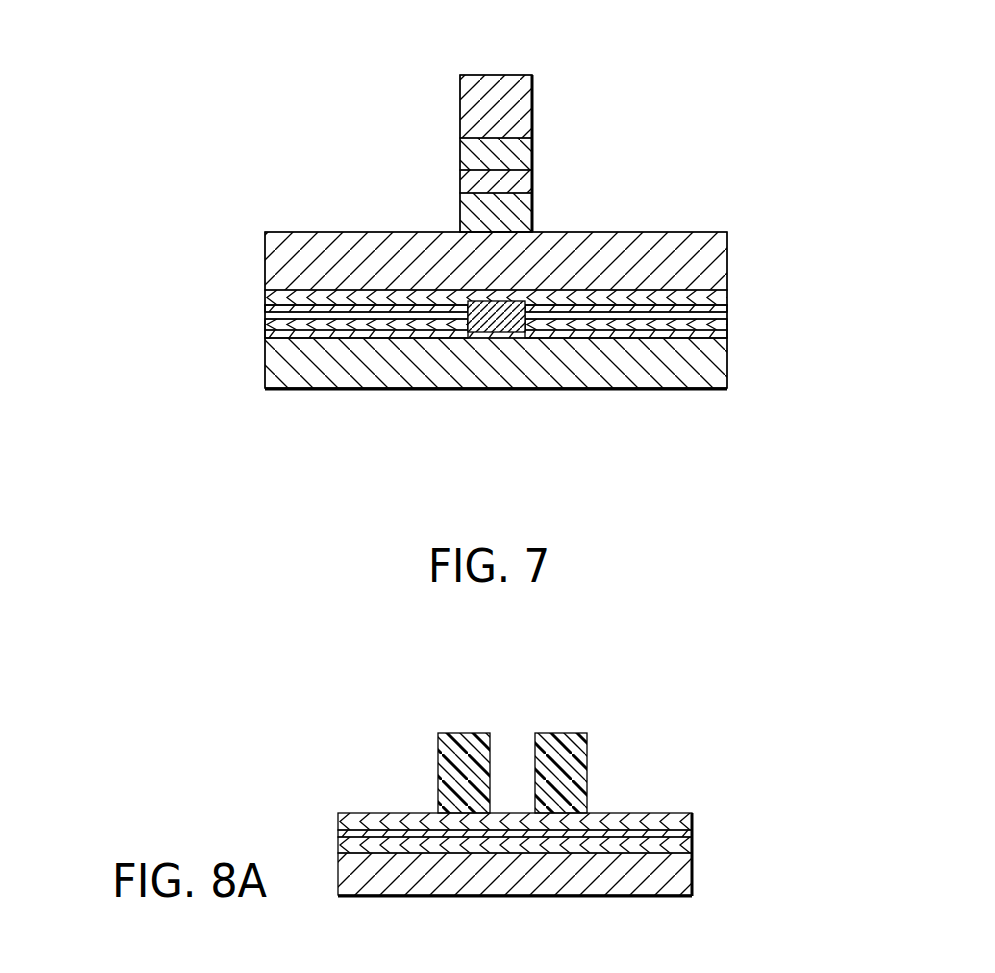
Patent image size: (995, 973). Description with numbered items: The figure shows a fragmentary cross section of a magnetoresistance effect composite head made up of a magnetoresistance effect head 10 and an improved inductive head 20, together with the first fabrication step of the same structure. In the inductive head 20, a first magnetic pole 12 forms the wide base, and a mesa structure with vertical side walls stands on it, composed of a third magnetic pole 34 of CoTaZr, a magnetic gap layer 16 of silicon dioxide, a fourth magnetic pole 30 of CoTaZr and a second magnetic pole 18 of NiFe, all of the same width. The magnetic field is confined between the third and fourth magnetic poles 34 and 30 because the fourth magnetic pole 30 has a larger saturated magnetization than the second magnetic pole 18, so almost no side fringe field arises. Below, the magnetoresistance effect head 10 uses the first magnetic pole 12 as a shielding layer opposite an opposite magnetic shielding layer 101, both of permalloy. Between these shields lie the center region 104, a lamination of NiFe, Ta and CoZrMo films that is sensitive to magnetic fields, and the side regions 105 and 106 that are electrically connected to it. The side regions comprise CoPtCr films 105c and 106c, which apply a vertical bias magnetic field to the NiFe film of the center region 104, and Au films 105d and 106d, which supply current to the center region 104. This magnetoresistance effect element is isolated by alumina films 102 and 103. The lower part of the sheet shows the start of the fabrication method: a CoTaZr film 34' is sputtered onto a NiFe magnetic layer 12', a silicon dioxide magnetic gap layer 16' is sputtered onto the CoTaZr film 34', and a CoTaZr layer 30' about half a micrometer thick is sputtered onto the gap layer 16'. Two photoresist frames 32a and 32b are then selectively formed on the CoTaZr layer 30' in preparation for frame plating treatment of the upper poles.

In FIG. 7, the magnetoresistance effect head 10 is at (95, 230).
In FIG. 7, the first magnetic pole 12 is at (496, 236).
In FIG. 7, the magnetic gap layer 16 is at (551, 156).
In FIG. 7, the second magnetic pole 18 is at (502, 75).
In FIG. 7, the inductive head 20 is at (771, 22).
In FIG. 7, the fourth magnetic pole 30 is at (547, 128).
In FIG. 7, the third magnetic pole 34 is at (552, 194).
In FIG. 7, the opposite magnetic shielding layer 101 is at (380, 378).
In FIG. 7, the alumina film 102 is at (437, 335).
In FIG. 7, the alumina film 103 is at (357, 299).
In FIG. 7, the center region 104 is at (505, 331).
In FIG. 7, the side region 105 is at (161, 270).
In FIG. 7, the CoPtCr film 105c is at (265, 320).
In FIG. 7, the Au film 105d is at (265, 309).
In FIG. 7, the side region 106 is at (857, 285).
In FIG. 7, the CoPtCr film 106c is at (729, 322).
In FIG. 7, the Au film 106d is at (729, 304).
In FIG. 8A, the NiFe magnetic layer 12' is at (578, 862).
In FIG. 8A, the silicon dioxide magnetic gap layer 16' is at (573, 833).
In FIG. 8A, the CoTaZr layer 30' is at (527, 800).
In FIG. 8A, the CoTaZr film 34' is at (573, 856).
In FIG. 8A, the first pillar 32a is at (438, 750).
In FIG. 8A, the second pillar 32b is at (587, 745).